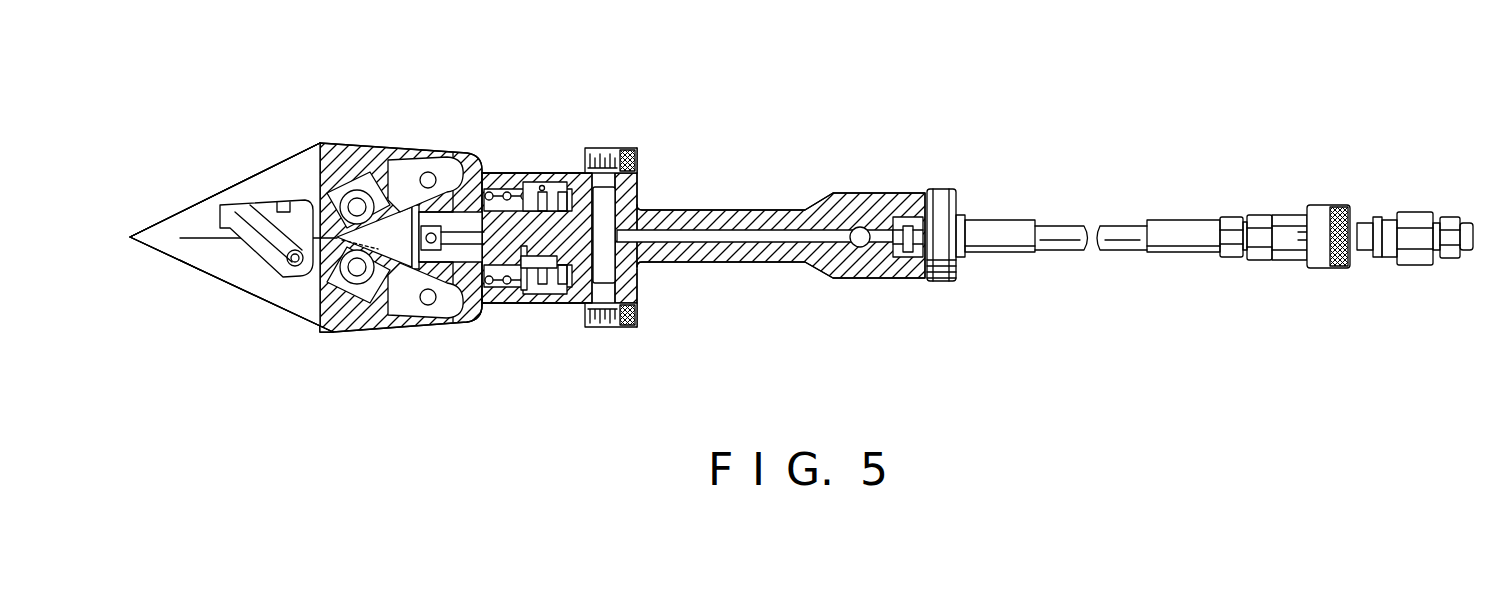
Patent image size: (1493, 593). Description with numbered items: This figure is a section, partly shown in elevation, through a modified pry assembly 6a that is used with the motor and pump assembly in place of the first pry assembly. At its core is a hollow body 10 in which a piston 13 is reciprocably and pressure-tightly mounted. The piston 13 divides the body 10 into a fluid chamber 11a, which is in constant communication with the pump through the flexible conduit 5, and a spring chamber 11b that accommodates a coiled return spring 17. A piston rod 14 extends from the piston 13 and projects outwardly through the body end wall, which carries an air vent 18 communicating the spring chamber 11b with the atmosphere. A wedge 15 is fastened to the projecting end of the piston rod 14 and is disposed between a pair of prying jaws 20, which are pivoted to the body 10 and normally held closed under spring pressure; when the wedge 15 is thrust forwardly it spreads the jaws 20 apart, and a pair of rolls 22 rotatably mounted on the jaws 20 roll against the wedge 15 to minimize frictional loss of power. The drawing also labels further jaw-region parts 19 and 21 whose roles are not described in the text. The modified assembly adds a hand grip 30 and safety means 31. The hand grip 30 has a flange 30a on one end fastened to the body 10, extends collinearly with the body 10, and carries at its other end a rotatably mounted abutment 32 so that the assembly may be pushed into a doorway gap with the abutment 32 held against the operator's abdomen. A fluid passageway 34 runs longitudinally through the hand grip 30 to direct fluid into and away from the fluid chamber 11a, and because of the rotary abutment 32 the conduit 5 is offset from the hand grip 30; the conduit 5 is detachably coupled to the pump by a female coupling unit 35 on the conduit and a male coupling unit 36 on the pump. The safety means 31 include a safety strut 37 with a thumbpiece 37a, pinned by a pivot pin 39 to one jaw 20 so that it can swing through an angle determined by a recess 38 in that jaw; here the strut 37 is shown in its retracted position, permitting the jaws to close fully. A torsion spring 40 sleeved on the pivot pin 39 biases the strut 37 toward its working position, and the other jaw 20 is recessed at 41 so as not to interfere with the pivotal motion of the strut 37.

The flexible conduit 5 is at (1060, 232).
The modified pry assembly 6a is at (652, 115).
The hollow body 10 is at (563, 303).
The fluid chamber 11a is at (470, 305).
The spring chamber 11b is at (605, 315).
The piston 13 is at (573, 193).
The piston rod 14 is at (513, 190).
The wedge 15 is at (402, 158).
The coiled return spring 17 is at (543, 298).
The air vent 18 is at (470, 168).
The pin 19 is at (438, 160).
The prying jaws 20 is at (183, 225).
The cone surface 21 is at (212, 195).
The rolls 22 is at (349, 192).
The hand grip 30 is at (740, 213).
The flange 30a is at (627, 193).
The safety means 31 is at (247, 176).
The abutment 32 is at (943, 198).
The fluid passageway 34 is at (767, 240).
The female coupling unit 35 is at (1315, 268).
The male coupling unit 36 is at (1415, 265).
The safety strut 37 is at (267, 245).
The thumbpiece 37a is at (188, 258).
The recess 38 is at (253, 272).
The pivot pin 39 is at (303, 275).
The torsion spring 40 is at (383, 317).
The recess 41 is at (284, 205).